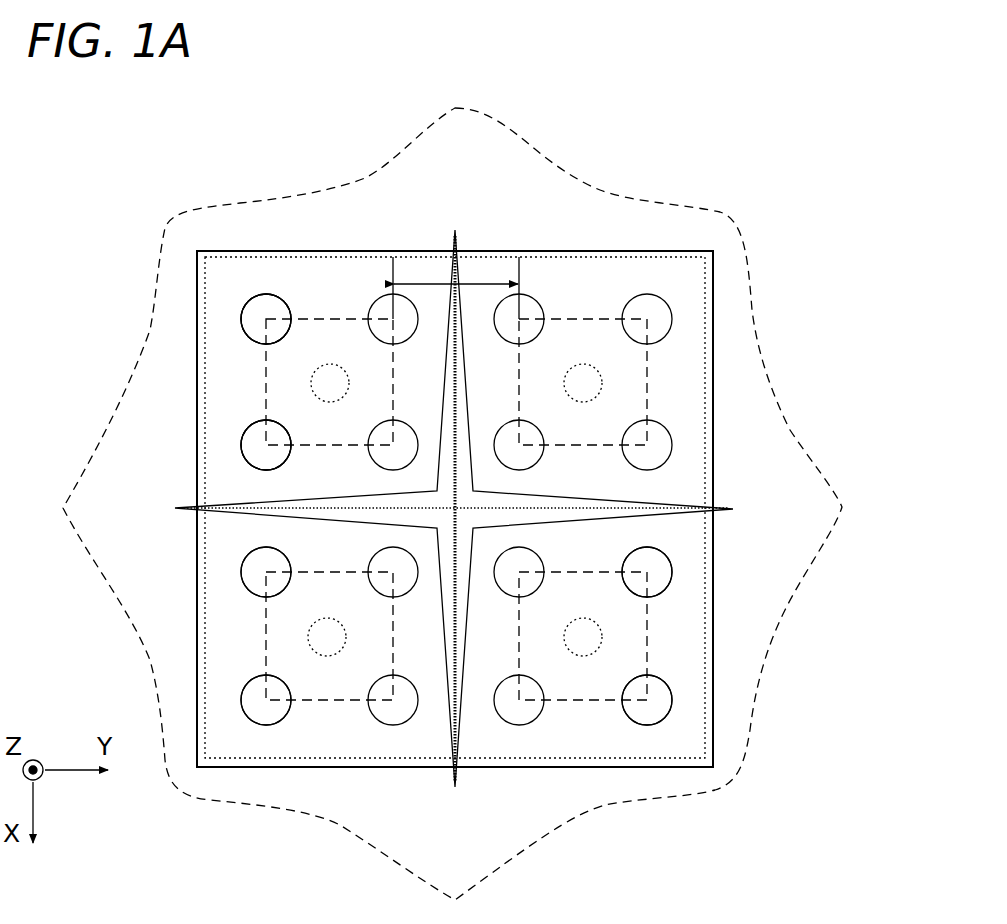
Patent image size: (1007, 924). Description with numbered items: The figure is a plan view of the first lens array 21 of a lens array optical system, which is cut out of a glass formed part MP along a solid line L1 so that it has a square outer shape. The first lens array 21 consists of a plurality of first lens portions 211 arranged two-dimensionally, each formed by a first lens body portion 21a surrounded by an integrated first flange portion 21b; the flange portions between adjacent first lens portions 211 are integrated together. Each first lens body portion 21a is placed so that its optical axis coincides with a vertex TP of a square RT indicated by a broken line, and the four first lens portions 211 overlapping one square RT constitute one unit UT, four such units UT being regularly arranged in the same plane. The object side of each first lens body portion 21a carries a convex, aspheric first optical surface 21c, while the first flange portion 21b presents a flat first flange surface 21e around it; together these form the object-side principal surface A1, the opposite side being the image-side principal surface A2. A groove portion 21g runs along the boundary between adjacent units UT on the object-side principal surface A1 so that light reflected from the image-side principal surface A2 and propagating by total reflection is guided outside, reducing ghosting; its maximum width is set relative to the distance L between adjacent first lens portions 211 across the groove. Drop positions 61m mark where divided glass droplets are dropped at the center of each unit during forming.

The glass formed part MP is at (560, 165).
The first lens array 21 is at (710, 238).
The unit UT is at (268, 257).
The first lens portion 211 is at (280, 306).
The first lens body portion 21a is at (257, 307).
The first optical surface 21c is at (194, 289).
The first flange portion 21b is at (253, 407).
The first flange surface 21e is at (155, 433).
The groove portion 21g is at (645, 513).
The square RT is at (263, 393).
The drop position 61m is at (308, 370).
The vertex TP is at (520, 318).
The distance L is at (473, 282).
The solid line L1 is at (540, 767).
The object-side principal surface A1 is at (330, 735).
The image-side principal surface A2 is at (380, 740).